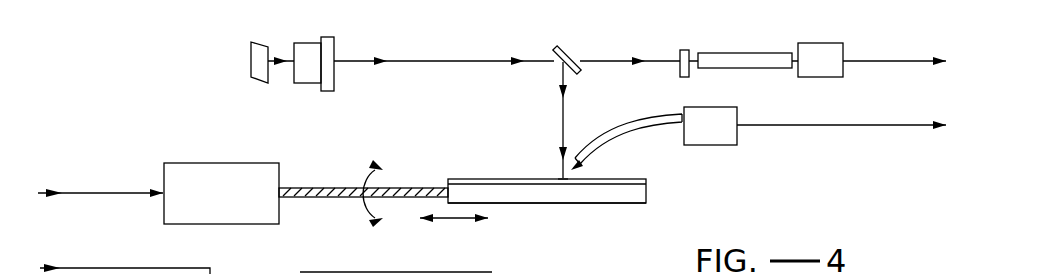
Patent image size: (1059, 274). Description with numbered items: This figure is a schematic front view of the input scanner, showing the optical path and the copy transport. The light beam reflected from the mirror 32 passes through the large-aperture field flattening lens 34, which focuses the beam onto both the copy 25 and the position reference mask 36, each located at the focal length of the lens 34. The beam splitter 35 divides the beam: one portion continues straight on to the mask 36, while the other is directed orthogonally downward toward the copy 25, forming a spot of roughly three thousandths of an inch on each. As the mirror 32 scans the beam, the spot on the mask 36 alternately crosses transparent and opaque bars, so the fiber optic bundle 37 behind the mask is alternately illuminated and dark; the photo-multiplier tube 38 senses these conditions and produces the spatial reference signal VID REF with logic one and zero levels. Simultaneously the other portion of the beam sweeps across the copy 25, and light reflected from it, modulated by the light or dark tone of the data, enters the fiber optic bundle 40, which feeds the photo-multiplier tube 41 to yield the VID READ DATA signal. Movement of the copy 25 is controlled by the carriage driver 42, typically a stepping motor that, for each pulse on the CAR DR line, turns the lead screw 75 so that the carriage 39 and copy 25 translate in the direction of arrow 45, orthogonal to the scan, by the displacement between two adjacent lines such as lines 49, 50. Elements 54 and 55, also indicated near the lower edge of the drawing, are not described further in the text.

The mirror 32 is at (251, 60).
The field flattening lens 34 is at (333, 40).
The beam splitter 35 is at (568, 48).
The position reference mask 36 is at (685, 50).
The fiber optic bundle 37 is at (745, 53).
The photo-multiplier tube 38 is at (820, 43).
The carriage driver 42 is at (257, 163).
The lead screw 75 is at (305, 187).
The arrow 45 is at (447, 223).
The copy 25 is at (463, 179).
The line 50 is at (550, 179).
The line 49 is at (558, 179).
The carriage 39 is at (586, 203).
The fiber optic bundle 40 is at (623, 142).
The photo-multiplier tube 41 is at (716, 145).
The write data line 55 is at (236, 273).
The control unit 54 is at (486, 273).